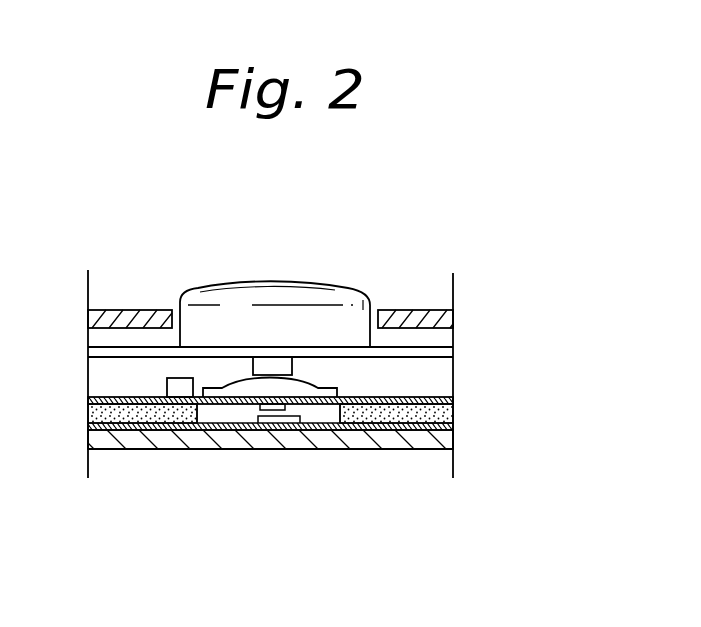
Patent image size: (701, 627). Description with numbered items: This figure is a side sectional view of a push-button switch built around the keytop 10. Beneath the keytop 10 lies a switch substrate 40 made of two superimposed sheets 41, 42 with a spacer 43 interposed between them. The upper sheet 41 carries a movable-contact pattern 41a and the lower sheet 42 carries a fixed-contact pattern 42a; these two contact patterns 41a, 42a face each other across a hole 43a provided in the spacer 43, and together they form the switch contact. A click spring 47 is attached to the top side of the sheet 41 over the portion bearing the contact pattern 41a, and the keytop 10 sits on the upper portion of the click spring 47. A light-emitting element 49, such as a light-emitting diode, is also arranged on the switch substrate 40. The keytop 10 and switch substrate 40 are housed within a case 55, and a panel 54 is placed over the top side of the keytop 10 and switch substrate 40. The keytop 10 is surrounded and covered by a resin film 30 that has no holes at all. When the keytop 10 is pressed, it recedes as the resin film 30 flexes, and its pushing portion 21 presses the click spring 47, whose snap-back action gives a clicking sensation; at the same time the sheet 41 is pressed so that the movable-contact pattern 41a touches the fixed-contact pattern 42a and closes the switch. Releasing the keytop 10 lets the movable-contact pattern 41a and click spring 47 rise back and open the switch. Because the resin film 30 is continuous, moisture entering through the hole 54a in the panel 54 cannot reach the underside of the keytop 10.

The keytop 10 is at (344, 282).
The pushing portion 21 is at (253, 368).
The resin film 30 is at (445, 349).
The switch substrate 40 is at (351, 451).
The sheet 41 is at (455, 400).
The movable-contact pattern 41a is at (262, 410).
The sheet 42 is at (318, 456).
The fixed-contact pattern 42a is at (300, 422).
The spacer 43 is at (455, 411).
The hole 43a is at (210, 412).
The click spring 47 is at (314, 388).
The light-emitting element 49 is at (168, 380).
The panel 54 is at (450, 318).
The hole 54a is at (175, 302).
The case 55 is at (415, 447).